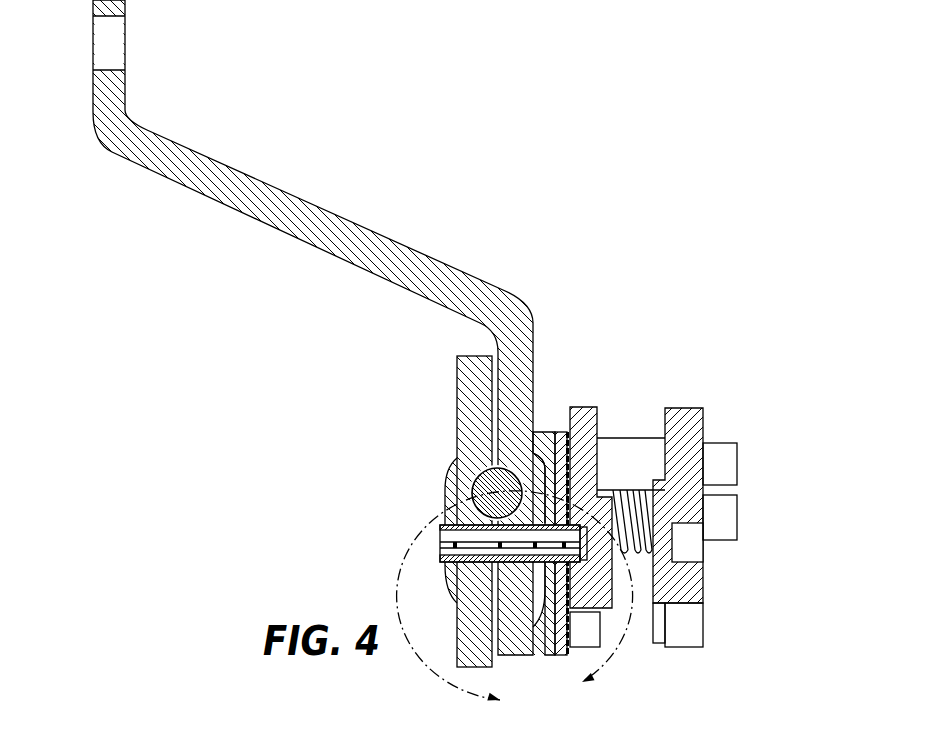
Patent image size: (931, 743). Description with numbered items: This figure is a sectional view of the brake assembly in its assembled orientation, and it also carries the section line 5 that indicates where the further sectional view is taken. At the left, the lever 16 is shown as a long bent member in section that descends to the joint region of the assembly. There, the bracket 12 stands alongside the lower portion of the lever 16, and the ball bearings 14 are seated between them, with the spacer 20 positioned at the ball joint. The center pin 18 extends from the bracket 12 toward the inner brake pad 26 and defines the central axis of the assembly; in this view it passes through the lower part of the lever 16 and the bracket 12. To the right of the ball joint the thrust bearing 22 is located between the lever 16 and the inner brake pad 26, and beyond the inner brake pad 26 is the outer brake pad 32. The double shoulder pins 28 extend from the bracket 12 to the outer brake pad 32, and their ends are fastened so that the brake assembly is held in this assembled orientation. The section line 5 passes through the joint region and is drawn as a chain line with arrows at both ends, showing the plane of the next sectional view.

The section line 5- 5 is at (515, 601).
The bracket 12 is at (467, 383).
The ball bearings 14 is at (543, 433).
The lever 16 is at (250, 177).
The center pin 18 is at (443, 550).
The spacer 20 is at (505, 480).
The thrust bearing 22 is at (570, 592).
The inner brake pad 26 is at (583, 417).
The double shoulder pins 28 is at (730, 462).
The outer brake pad 32 is at (693, 587).